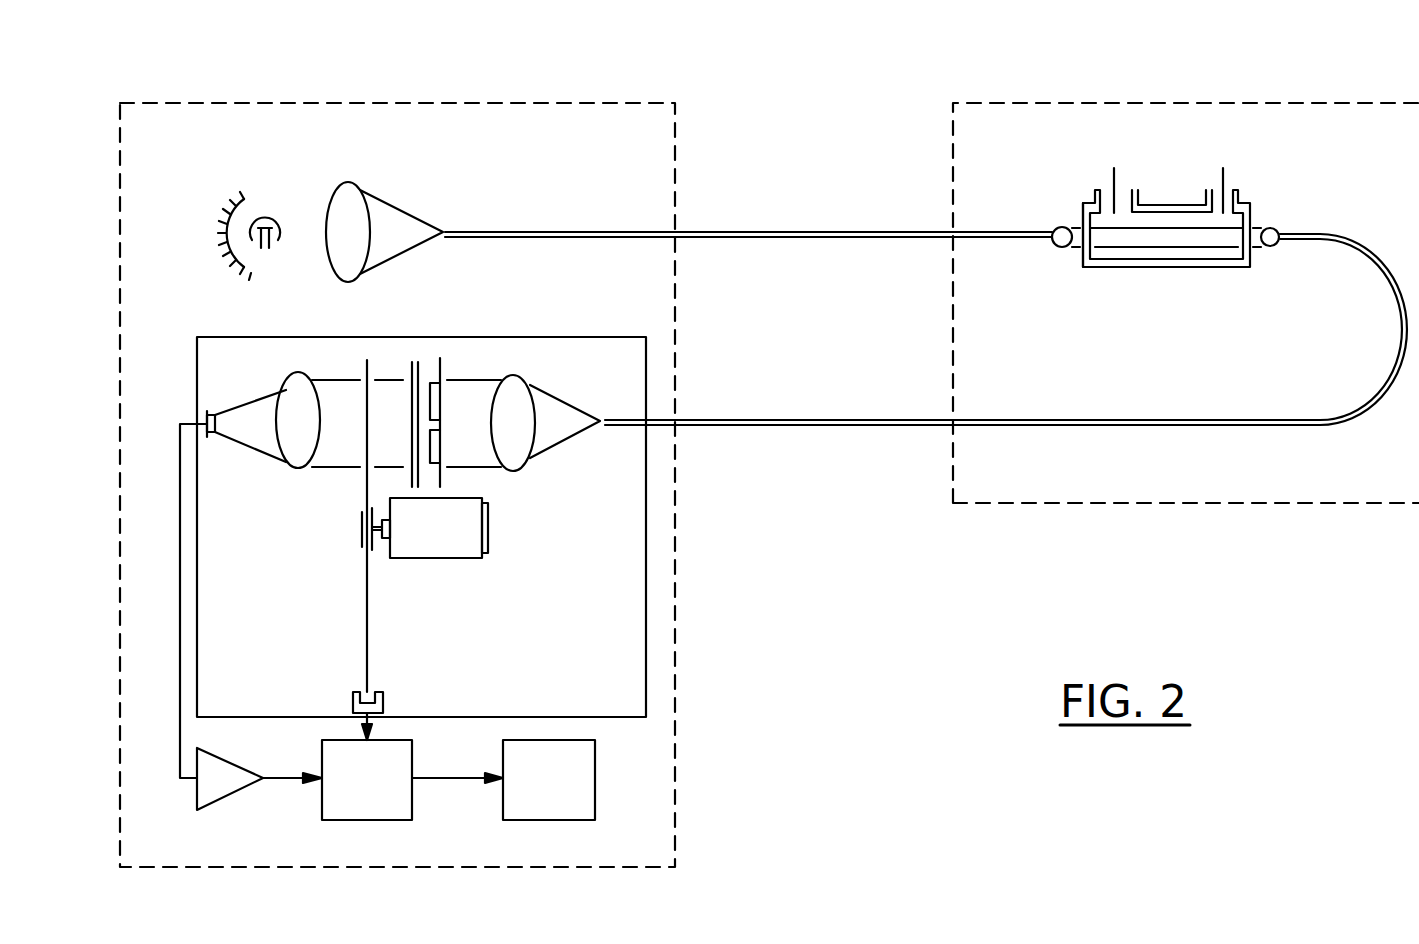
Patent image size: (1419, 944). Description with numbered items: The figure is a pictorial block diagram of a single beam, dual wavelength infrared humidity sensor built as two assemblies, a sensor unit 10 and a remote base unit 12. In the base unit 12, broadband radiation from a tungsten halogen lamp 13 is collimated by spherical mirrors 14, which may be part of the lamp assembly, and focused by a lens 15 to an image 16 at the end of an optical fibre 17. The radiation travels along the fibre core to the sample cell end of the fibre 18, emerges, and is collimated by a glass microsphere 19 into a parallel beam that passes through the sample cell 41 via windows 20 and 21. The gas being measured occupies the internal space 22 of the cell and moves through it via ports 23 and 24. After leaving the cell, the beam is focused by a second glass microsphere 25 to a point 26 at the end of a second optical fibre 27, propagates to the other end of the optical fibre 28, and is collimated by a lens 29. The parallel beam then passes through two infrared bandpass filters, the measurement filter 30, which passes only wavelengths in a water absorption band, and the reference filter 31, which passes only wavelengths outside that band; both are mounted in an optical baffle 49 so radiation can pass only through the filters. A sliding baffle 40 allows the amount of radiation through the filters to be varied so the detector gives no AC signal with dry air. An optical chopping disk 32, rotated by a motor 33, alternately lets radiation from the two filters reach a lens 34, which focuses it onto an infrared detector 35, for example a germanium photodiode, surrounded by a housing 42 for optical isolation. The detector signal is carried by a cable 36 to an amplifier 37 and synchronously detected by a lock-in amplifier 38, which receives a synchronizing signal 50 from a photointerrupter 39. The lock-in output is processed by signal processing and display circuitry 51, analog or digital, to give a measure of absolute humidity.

The sensor unit 10 is at (990, 504).
The remote base unit 12 is at (673, 578).
The tungsten halogen lamp 13 is at (274, 242).
The spherical mirrors 14 is at (240, 207).
The lens 15 is at (357, 186).
The image 16 is at (445, 228).
The optical fibre 17 is at (760, 232).
The sample cell end of the fibre 18 is at (1058, 227).
The glass microsphere 19 is at (1061, 248).
The window 20 is at (1083, 210).
The window 21 is at (1250, 266).
The internal space 22 is at (1185, 247).
The port 23 is at (1114, 168).
The port 24 is at (1223, 168).
The second glass microsphere 25 is at (1270, 226).
The point 26 is at (1286, 241).
The second optical fibre 27 is at (795, 419).
The other end of the optical fibre 28 is at (600, 430).
The lens 29 is at (516, 473).
The measurement filter 30 is at (440, 396).
The reference filter 31 is at (438, 455).
The optical chopping disk 32 is at (367, 480).
The motor 33 is at (447, 558).
The lens 34 is at (293, 468).
The infrared detector 35 is at (213, 413).
The cable 36 is at (180, 702).
The amplifier 37 is at (200, 812).
The lock-in amplifier 38 is at (412, 815).
The photointerrupter 39 is at (383, 703).
The sliding baffle 40 is at (412, 405).
The sample cell 41 is at (1130, 267).
The housing 42 is at (646, 590).
The optical baffle 49 is at (440, 376).
The synchronizing signal 50 is at (357, 736).
The signal processing and display circuitry 51 is at (595, 765).